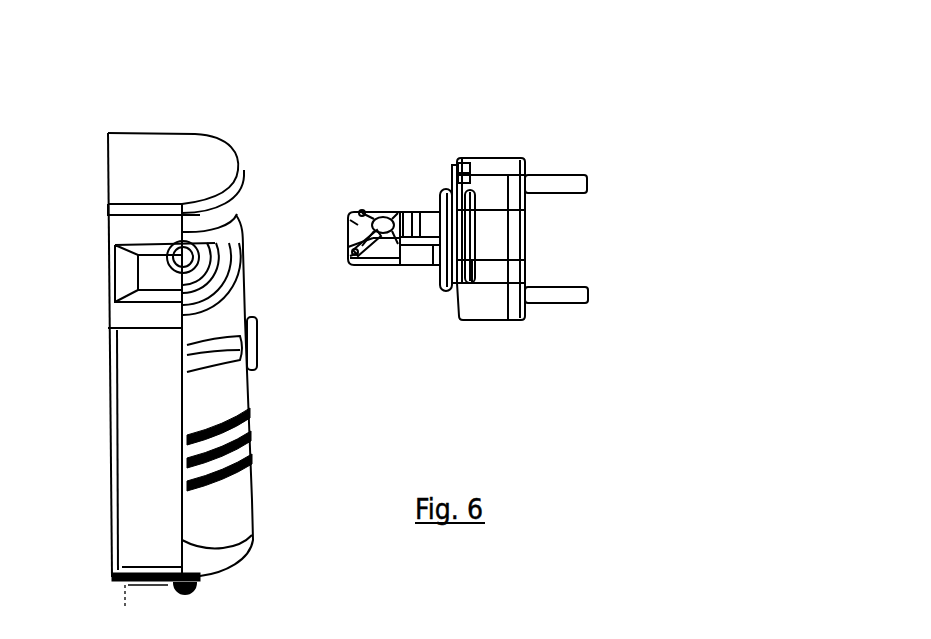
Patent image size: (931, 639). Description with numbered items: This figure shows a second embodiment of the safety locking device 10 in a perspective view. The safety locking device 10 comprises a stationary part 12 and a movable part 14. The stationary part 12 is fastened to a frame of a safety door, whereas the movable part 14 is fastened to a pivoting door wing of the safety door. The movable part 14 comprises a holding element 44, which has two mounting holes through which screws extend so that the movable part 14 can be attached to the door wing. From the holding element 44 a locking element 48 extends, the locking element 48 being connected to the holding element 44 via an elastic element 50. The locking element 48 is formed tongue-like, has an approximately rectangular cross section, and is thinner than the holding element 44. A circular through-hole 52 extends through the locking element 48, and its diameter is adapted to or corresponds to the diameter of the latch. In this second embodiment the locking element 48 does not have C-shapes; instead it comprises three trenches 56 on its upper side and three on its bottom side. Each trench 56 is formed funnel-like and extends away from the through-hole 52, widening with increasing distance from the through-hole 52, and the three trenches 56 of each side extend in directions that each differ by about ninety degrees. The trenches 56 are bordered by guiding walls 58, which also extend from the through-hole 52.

The safety locking device 10 is at (403, 100).
The stationary part 12 is at (165, 118).
The movable part 14 is at (504, 138).
The holding element 44 is at (507, 240).
The locking element 48 is at (418, 252).
The elastic element 50 is at (446, 285).
The through-hole 52 is at (388, 216).
The trench 56 is at (379, 218).
The guiding wall 58 is at (361, 212).